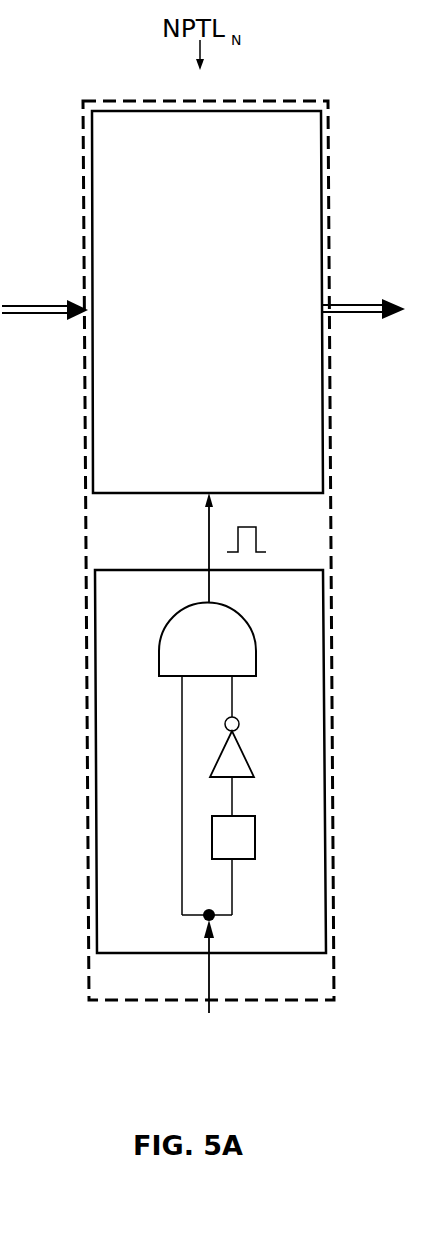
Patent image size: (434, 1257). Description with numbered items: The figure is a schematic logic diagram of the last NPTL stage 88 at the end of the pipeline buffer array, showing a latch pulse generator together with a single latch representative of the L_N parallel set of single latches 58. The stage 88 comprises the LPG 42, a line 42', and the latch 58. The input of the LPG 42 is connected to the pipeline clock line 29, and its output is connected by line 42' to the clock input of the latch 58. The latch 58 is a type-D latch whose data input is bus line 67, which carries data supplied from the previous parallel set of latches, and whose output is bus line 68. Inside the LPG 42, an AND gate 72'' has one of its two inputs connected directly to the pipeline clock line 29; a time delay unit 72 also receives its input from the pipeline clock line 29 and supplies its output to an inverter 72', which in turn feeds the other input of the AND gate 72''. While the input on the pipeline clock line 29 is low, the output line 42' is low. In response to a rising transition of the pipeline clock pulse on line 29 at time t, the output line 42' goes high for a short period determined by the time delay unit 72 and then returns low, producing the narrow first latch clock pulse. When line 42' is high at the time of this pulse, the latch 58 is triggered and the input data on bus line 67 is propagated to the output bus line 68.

The NPTL_N stage 88 is at (126, 1033).
The L_N parallel set of single latches 58 is at (193, 192).
The bus line 67 is at (42, 305).
The output bus line 68 is at (353, 303).
The line 42' is at (212, 548).
The LPG 42 is at (210, 761).
The AND gate 72'' is at (234, 633).
The inverter 72' is at (263, 736).
The time delay unit 72 is at (264, 846).
The pipeline clock line 29 is at (209, 976).